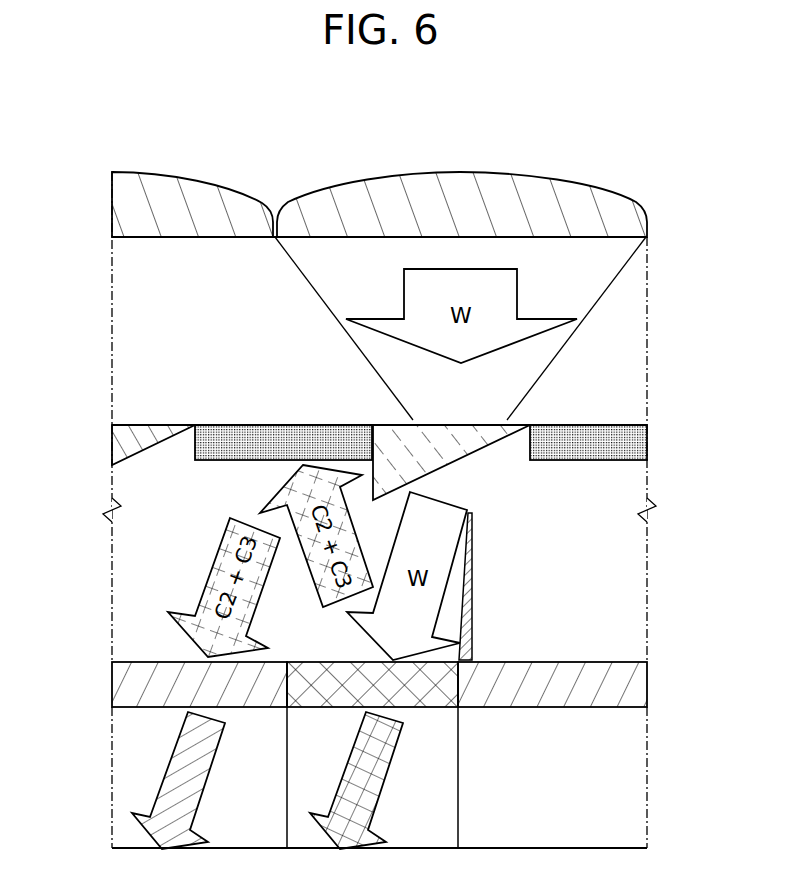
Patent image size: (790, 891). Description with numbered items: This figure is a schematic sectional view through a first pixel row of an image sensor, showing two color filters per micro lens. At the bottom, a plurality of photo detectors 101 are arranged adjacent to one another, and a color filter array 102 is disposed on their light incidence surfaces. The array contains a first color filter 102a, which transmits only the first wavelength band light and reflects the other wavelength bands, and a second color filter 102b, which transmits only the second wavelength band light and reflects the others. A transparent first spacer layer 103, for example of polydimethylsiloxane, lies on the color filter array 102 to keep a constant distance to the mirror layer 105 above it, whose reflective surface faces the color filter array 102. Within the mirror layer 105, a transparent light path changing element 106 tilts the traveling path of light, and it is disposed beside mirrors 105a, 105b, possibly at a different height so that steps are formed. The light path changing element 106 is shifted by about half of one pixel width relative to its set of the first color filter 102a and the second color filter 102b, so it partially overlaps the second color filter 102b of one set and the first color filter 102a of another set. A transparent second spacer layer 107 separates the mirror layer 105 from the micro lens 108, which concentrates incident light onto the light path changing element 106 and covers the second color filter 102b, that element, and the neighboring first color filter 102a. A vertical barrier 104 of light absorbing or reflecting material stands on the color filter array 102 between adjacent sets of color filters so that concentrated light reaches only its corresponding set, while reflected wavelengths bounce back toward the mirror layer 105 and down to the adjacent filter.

The photo detector 101 is at (637, 790).
The color filter array 102 is at (369, 714).
The first color filter 102a is at (112, 688).
The second color filter 102b is at (430, 700).
The first spacer layer 103 is at (637, 576).
The vertical barrier 104 is at (474, 611).
The mirror layer 105 is at (370, 464).
The mirror 105a is at (640, 433).
The mirror 105b is at (205, 452).
The light path changing element 106 is at (480, 442).
The second spacer layer 107 is at (637, 309).
The micro lens 108 is at (469, 178).